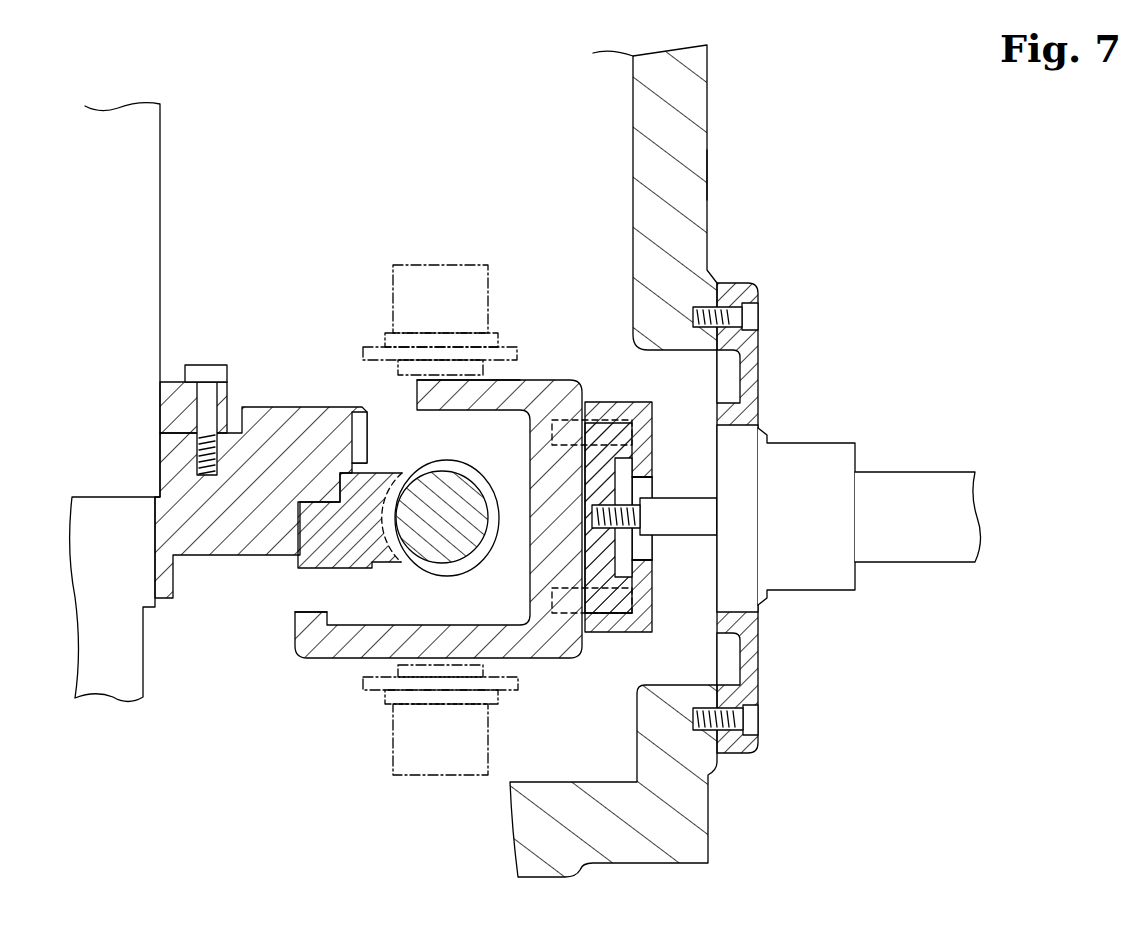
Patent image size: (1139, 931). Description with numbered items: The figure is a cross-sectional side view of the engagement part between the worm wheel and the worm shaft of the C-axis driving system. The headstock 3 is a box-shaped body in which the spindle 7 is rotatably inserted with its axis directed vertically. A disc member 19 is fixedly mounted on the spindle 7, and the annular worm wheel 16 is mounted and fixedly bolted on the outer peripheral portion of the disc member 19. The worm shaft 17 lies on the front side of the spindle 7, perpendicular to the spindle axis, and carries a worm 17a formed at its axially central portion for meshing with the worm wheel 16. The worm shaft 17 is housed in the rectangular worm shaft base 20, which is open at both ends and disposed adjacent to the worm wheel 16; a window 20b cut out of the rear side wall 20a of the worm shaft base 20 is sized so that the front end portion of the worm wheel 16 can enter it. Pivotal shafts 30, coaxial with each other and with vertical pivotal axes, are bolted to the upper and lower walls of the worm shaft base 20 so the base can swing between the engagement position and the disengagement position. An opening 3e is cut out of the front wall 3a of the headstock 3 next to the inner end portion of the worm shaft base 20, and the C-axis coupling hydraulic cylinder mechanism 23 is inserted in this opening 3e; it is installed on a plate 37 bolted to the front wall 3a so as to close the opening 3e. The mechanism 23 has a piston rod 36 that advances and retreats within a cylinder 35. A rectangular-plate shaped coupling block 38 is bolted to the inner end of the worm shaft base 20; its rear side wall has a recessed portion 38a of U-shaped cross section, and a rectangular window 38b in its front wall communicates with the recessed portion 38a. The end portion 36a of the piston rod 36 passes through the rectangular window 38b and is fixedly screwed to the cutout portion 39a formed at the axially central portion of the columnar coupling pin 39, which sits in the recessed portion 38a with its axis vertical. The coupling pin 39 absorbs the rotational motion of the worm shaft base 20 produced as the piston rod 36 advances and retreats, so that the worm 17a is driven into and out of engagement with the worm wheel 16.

The headstock 3 is at (709, 105).
The front wall 3a is at (709, 168).
The opening 3e is at (697, 351).
The spindle 7 is at (160, 178).
The worm wheel 16 is at (307, 573).
The worm shaft 17 is at (413, 562).
The worm 17a is at (418, 462).
The disc member 19 is at (292, 405).
The worm shaft base 20 is at (553, 382).
The rear side wall 20a is at (295, 615).
The window 20b is at (413, 400).
The C-axis coupling hydraulic cylinder mechanism 23 is at (815, 603).
The pivotal shaft 30 is at (488, 272).
The cylinder 35 is at (900, 472).
The piston rod 36 is at (688, 537).
The end portion of piston rod 36a is at (640, 497).
The plate 37 is at (760, 673).
The coupling block 38 is at (637, 398).
The recessed portion 38a is at (632, 568).
The rectangular window 38b is at (642, 477).
The coupling pin 39 is at (601, 422).
The cutout portion 39a is at (598, 633).